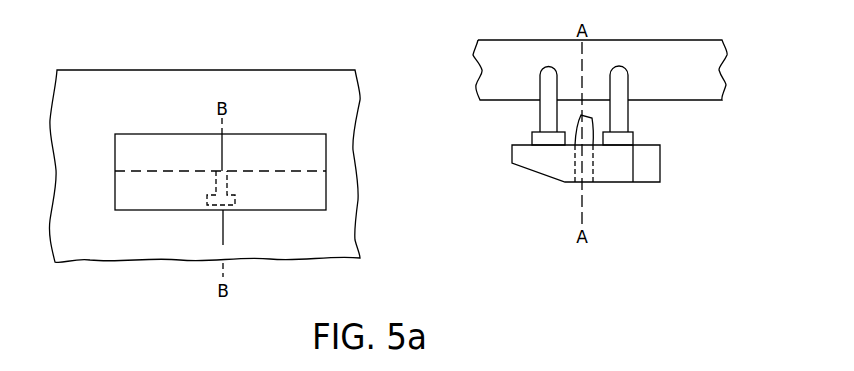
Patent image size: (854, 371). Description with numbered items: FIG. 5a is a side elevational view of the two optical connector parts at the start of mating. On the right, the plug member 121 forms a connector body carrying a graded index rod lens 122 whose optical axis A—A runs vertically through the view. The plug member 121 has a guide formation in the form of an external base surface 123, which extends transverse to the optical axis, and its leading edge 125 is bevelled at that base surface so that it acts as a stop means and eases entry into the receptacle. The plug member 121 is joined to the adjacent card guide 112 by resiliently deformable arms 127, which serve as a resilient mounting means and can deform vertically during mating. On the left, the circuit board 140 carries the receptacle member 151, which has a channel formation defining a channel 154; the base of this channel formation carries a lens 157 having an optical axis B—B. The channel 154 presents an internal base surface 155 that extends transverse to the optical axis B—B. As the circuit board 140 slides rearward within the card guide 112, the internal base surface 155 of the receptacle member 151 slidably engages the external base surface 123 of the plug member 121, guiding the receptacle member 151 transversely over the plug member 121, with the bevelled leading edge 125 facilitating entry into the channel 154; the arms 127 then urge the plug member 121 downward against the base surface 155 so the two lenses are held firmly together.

The card guide 112 is at (662, 50).
The plug member 121 is at (655, 162).
The graded index rod lens 122 is at (578, 187).
The external base surface 123 is at (617, 184).
The leading edge 125 is at (512, 148).
The resiliently deformable arms 127 is at (547, 113).
The circuit board 140 is at (252, 88).
The receptacle member 151 is at (140, 202).
The channel 154 is at (300, 137).
The internal base surface 155 is at (155, 170).
The lens 157 is at (214, 172).